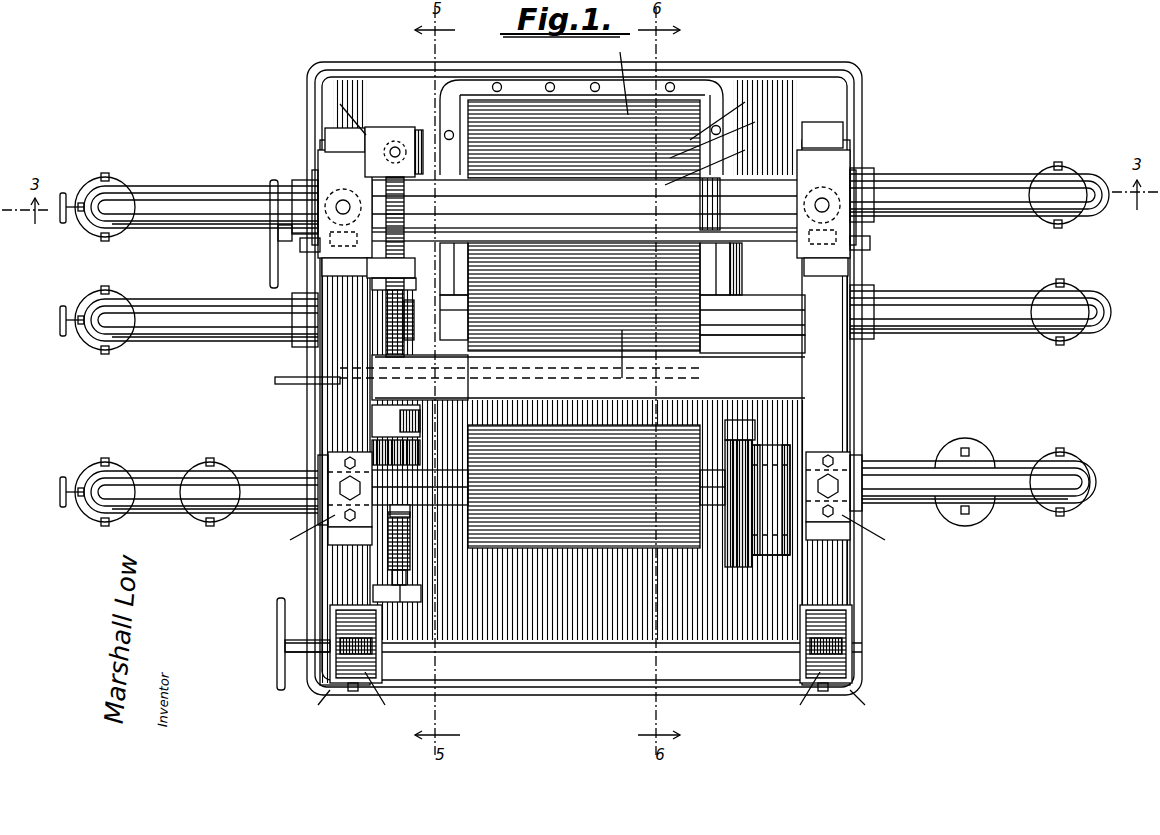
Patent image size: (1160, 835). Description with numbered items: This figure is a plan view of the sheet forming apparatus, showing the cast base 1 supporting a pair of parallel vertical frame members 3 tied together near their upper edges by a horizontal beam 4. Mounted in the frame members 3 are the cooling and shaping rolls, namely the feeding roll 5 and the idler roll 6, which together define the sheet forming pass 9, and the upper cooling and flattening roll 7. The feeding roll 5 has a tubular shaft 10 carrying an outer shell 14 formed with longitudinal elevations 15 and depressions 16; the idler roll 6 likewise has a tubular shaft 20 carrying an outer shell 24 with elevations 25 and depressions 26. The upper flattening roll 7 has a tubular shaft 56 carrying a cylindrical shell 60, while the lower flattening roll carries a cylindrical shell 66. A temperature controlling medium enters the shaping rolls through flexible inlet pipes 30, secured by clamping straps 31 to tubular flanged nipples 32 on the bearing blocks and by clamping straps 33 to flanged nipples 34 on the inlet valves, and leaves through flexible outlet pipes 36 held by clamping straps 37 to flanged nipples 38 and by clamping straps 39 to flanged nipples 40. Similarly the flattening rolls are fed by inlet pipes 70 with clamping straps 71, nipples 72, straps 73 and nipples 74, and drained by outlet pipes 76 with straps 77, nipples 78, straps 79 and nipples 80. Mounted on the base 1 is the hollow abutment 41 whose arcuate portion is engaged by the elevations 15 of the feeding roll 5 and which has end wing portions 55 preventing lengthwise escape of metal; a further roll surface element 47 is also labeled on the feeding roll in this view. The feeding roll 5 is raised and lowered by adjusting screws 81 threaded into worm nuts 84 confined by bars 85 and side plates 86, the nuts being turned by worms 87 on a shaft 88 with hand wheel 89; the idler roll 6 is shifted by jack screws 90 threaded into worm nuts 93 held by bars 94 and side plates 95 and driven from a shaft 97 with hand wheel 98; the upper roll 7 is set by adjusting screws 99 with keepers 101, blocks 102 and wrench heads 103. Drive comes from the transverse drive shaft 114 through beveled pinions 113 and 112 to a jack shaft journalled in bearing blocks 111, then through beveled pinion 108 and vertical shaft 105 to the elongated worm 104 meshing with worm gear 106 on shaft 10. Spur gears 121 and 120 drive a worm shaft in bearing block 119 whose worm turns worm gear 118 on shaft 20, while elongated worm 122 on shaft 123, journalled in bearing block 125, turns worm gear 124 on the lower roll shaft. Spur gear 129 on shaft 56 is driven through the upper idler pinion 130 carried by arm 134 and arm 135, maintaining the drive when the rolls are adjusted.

The base 1 is at (775, 85).
The frame members 3 is at (330, 406).
The horizontally extending beam 4 is at (520, 382).
The feeding roll 5 is at (584, 157).
The idler roll 6 is at (584, 297).
The upper cooling and flattening roll 7 is at (584, 486).
The sheet forming pass 9 is at (480, 266).
The tubular shaft 10 is at (585, 204).
The outer shell 14 is at (727, 112).
The elevations 15 is at (722, 131).
The depressions 16 is at (715, 159).
The tubular shaft 20 is at (462, 320).
The outer shell 24 is at (710, 270).
The elevations 25 is at (690, 352).
The depressions 26 is at (619, 363).
The flexible inlet pipes 30 is at (218, 200).
The clamping straps 31 is at (298, 185).
The tubular flanged nipples 32 is at (318, 345).
The clamping straps 33 is at (118, 185).
The flanged nipples 34 is at (95, 182).
The flexible outlet pipes 36 is at (968, 185).
The clamping straps 37 is at (872, 175).
The flanged nipples 38 is at (862, 340).
The clamping straps 39 is at (1052, 170).
The flanged nipples 40 is at (1082, 170).
The abutment 41 is at (528, 95).
The roll surface 47 is at (623, 75).
The wing portions 55 is at (708, 256).
The tubular shaft 56 is at (462, 490).
The outer cylindrical shell 60 is at (580, 520).
The cylindrical shell 66 is at (715, 488).
The flexible inlet pipes 70 is at (170, 492).
The clamping straps 71 is at (320, 470).
The tubular flanged nipples 72 is at (322, 510).
The clamping straps 73 is at (120, 468).
The flanged nipples 74 is at (978, 460).
The flexible outlet pipes 76 is at (1018, 482).
The clamping straps 77 is at (100, 462).
The flanged nipples 78 is at (862, 508).
The clamping straps 79 is at (205, 462).
The flanged nipples 80 is at (225, 468).
The adjusting screws 81 is at (343, 200).
The worm nuts 84 is at (584, 190).
The bars 85 is at (308, 250).
The side plates 86 is at (314, 180).
The worms 87 is at (585, 268).
The shaft 88 is at (280, 243).
The hand wheel 89 is at (270, 243).
The jack screws 90 is at (352, 692).
The worm nuts 93 is at (591, 707).
The bars 94 is at (592, 698).
The side plates 95 is at (332, 660).
The shaft 97 is at (633, 645).
The hand wheel 98 is at (277, 622).
The adjusting screws 99 is at (589, 477).
The keepers 101 is at (343, 112).
The blocks 102 is at (589, 535).
The heads 103 is at (589, 534).
The elongated worm 104 is at (390, 133).
The vertically extending shaft 105 is at (393, 148).
The worm gear 106 is at (404, 207).
The beveled pinion 108 is at (420, 139).
The bearing blocks 111 is at (374, 288).
The beveled pinion 112 is at (415, 362).
The beveled pinion 113 is at (372, 365).
The drive shaft 114 is at (275, 381).
The worm gear 118 is at (404, 321).
The bearing block 119 is at (420, 415).
The spur gear 120 is at (375, 275).
The spur gear 121 is at (420, 450).
The elongated worm 122 is at (410, 553).
The shaft 123 is at (405, 604).
The worm gear 124 is at (405, 512).
The bearing block 125 is at (421, 592).
The spur gear 129 is at (738, 421).
The upper idler pinion 130 is at (738, 555).
The arm 134 is at (768, 580).
The arm 135 is at (775, 550).